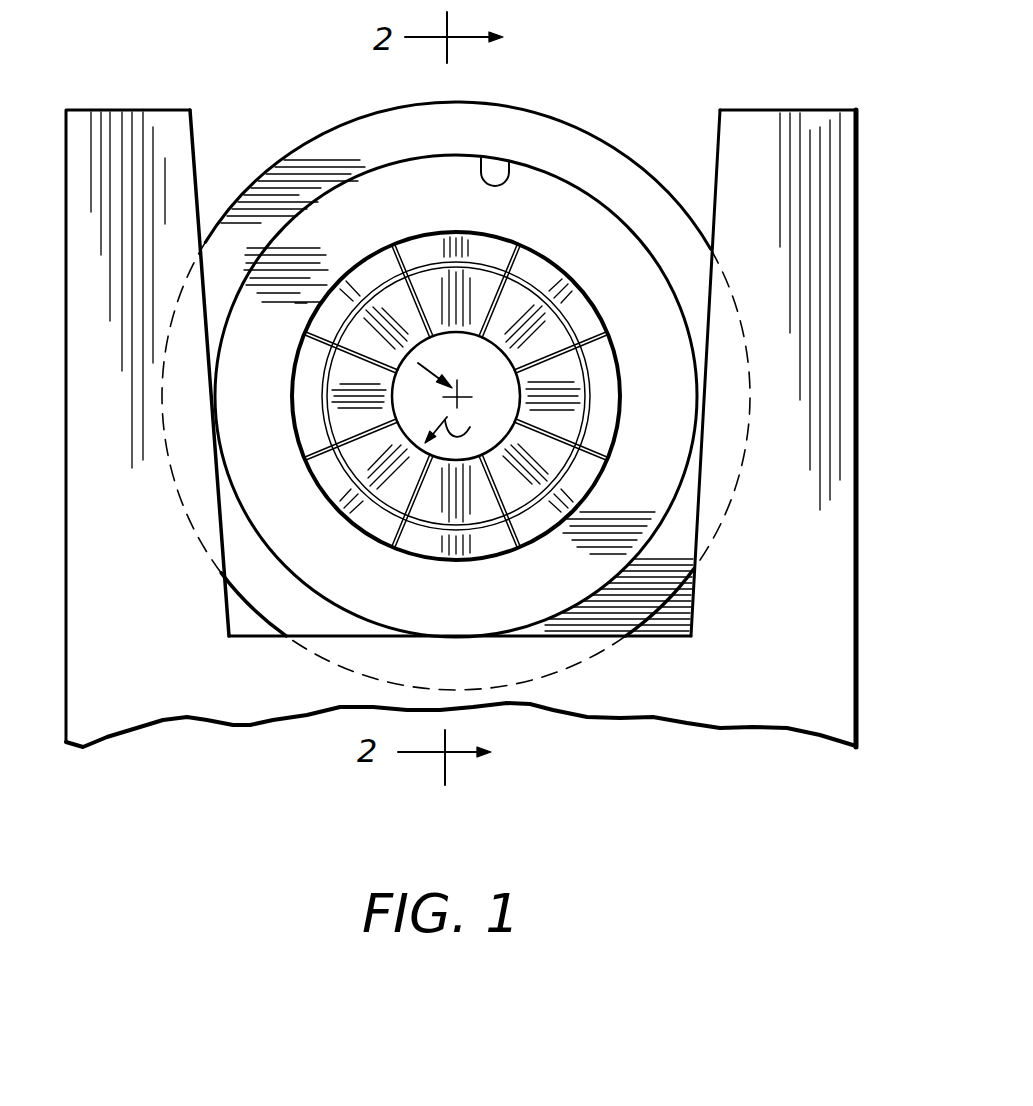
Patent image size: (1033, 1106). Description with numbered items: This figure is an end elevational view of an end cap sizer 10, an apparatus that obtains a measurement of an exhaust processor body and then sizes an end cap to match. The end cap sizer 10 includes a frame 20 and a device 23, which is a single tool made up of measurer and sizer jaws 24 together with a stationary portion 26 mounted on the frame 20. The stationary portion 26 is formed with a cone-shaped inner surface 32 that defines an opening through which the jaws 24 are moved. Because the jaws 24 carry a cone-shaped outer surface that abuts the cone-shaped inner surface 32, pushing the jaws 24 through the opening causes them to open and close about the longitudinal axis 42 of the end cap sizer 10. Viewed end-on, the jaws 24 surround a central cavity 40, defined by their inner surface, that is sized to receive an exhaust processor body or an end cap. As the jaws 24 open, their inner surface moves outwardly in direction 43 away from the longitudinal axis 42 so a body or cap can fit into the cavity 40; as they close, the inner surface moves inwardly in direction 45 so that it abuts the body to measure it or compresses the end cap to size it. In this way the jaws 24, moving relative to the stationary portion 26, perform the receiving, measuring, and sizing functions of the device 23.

The end cap sizer 10 is at (461, 502).
The frame 20 is at (825, 578).
The device 23 is at (642, 350).
The measurer and sizer jaws 24 is at (542, 272).
The stationary portion 26 is at (320, 135).
The cone-shaped inner surface 32 is at (507, 172).
The cavity 40 is at (467, 455).
The longitudinal axis 42 is at (480, 373).
The outward direction 43 is at (466, 428).
The inward direction 45 is at (428, 388).